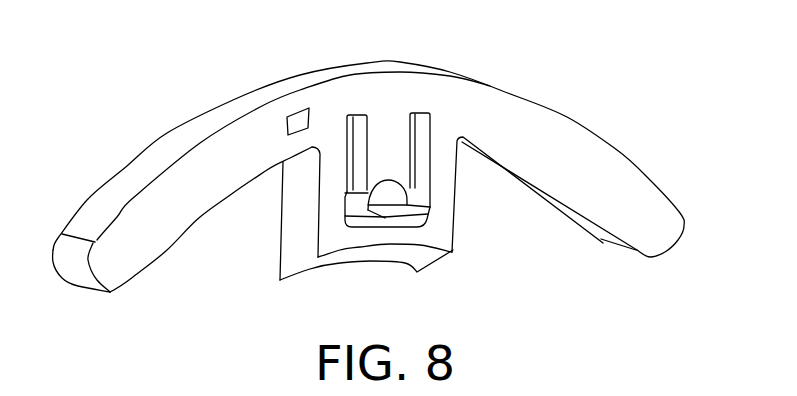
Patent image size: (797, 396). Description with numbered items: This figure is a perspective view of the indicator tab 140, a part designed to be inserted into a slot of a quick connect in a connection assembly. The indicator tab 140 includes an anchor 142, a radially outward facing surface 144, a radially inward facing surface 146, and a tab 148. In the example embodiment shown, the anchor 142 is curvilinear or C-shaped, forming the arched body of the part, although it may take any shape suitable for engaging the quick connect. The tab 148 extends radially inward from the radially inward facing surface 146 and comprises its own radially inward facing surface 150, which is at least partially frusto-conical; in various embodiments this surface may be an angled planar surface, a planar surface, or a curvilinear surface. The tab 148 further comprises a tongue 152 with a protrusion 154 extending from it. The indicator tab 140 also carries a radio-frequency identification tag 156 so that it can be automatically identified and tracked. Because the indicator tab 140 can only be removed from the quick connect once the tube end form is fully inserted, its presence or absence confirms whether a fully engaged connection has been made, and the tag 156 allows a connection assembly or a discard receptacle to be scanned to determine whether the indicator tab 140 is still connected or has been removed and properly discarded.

The indicator tab 140 is at (400, 178).
The anchor 142 is at (150, 218).
The radially outward facing surface 144 is at (157, 155).
The radially inward facing surface 146 is at (593, 217).
The tab 148 is at (327, 237).
The radially inward facing surface 150 is at (403, 257).
The tongue 152 is at (387, 147).
The protrusion 154 is at (390, 191).
The radio-frequency identification (RFID) tag 156 is at (300, 114).